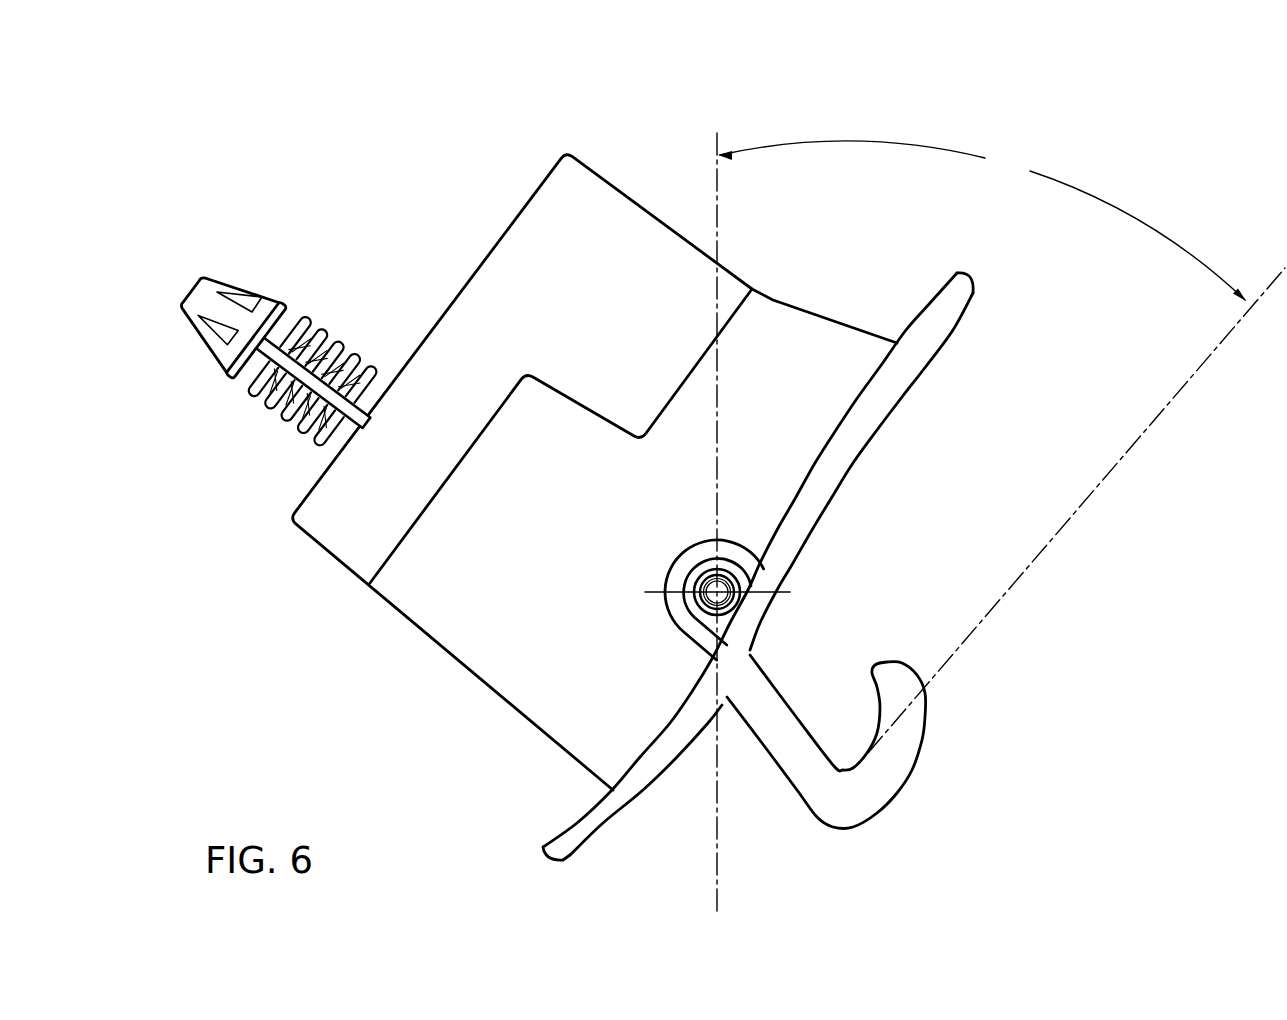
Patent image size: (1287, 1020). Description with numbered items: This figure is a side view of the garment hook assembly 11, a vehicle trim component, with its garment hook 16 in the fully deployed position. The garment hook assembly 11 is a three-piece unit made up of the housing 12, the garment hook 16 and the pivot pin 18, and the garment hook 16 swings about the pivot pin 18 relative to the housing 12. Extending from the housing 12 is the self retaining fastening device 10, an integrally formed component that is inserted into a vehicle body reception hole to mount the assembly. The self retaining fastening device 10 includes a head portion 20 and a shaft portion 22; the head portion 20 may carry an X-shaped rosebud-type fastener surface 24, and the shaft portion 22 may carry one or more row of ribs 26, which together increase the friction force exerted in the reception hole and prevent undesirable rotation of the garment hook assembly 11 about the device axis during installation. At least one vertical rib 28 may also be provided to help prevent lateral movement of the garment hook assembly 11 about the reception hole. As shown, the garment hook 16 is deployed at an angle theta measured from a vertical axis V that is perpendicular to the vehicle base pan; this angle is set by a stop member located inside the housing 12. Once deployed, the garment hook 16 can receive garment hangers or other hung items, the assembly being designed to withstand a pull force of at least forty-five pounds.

The self retaining fastening device 10 is at (237, 187).
The garment hook assembly 11 is at (658, 114).
The housing 12 is at (633, 201).
The garment hook 16 is at (892, 768).
The pivot pin 18 is at (707, 612).
The head portion 20 is at (225, 274).
The shaft portion 22 is at (336, 330).
The rosebud-type fastener surface 24 is at (190, 288).
The row of ribs 26 is at (263, 403).
The vertical rib 28 is at (333, 397).